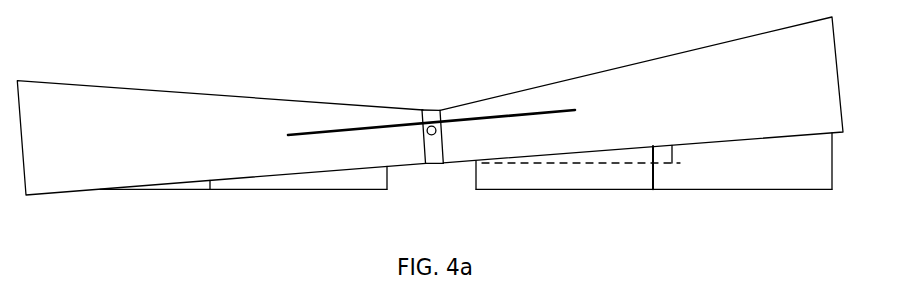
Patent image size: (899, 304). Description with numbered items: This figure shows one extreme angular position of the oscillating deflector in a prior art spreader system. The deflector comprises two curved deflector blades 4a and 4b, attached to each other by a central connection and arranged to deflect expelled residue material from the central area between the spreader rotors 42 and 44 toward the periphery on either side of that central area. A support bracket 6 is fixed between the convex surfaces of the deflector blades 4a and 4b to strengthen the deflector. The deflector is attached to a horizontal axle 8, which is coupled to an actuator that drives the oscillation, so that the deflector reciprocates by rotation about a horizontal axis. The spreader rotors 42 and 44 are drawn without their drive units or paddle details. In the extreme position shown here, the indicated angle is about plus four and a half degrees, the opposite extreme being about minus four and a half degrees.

The deflector blade 4a is at (80, 148).
The deflector blade 4b is at (795, 95).
The support bracket 6 is at (342, 128).
The horizontal axle 8 is at (432, 135).
The spreader rotor 42 is at (365, 178).
The spreader rotor 44 is at (772, 179).